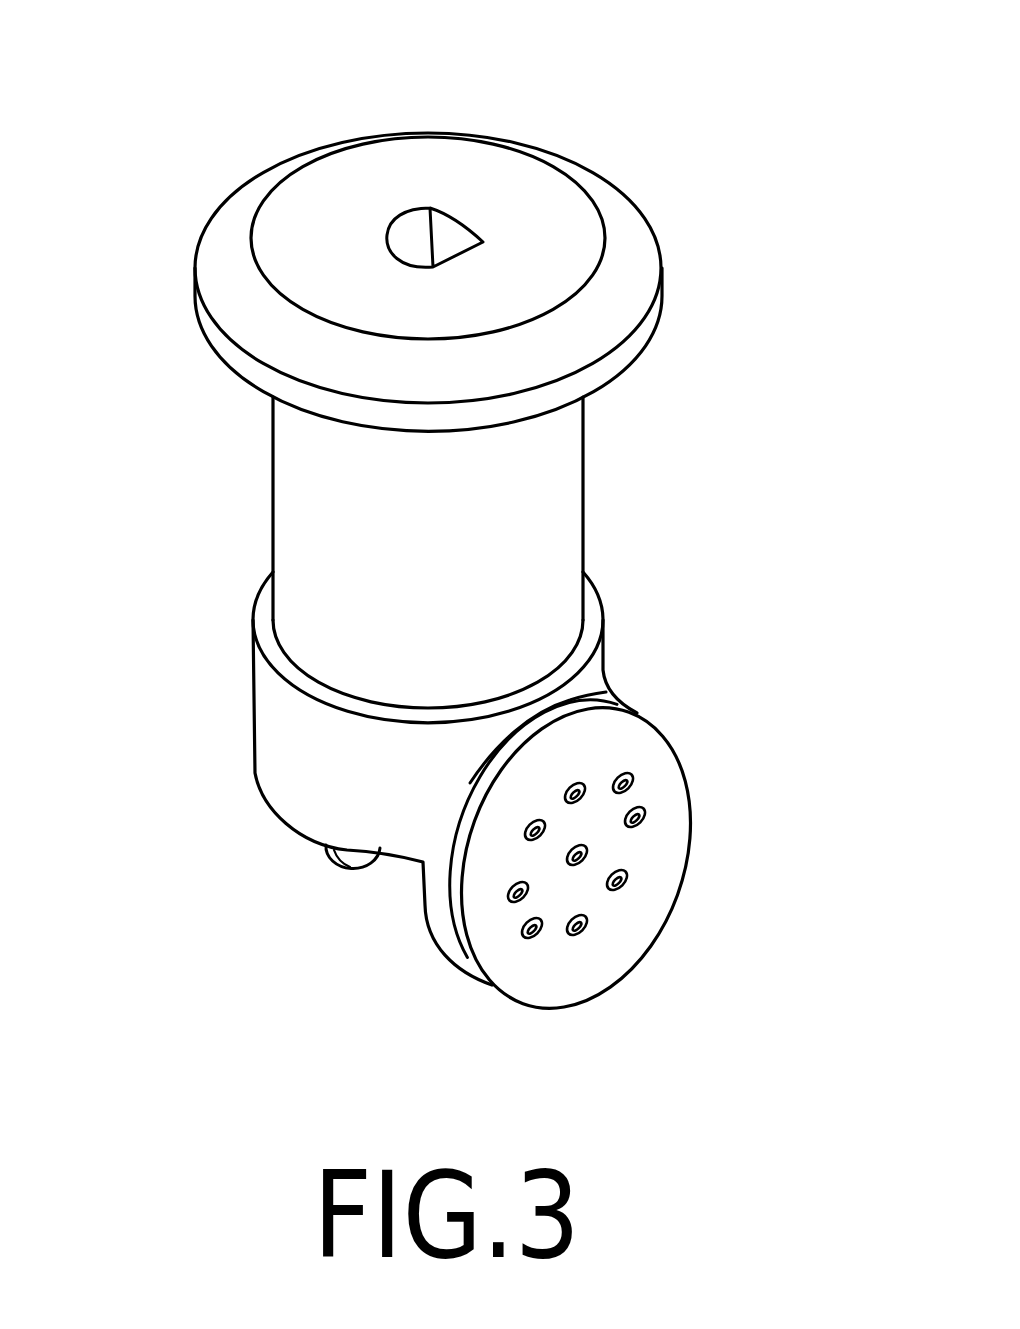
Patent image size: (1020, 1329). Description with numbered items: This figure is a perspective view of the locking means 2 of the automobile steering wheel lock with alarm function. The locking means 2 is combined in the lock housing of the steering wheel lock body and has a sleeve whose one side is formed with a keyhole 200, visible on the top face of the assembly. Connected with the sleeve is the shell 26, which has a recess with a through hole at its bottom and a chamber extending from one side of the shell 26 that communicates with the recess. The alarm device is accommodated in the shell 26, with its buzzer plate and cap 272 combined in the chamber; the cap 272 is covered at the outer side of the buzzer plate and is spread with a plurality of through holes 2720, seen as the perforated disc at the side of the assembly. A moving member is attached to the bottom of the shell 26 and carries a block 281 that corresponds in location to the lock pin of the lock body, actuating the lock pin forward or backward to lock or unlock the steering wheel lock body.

The locking means 2 is at (212, 530).
The keyhole 200 is at (450, 240).
The shell 26 is at (600, 684).
The cap 272 is at (618, 910).
The through holes 2720 is at (648, 815).
The block 281 is at (352, 864).